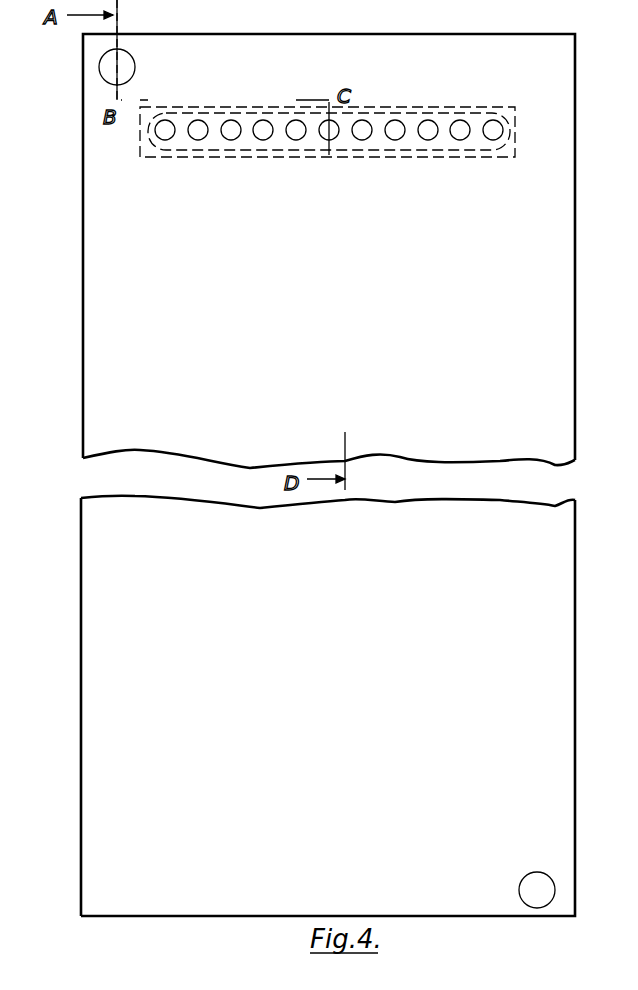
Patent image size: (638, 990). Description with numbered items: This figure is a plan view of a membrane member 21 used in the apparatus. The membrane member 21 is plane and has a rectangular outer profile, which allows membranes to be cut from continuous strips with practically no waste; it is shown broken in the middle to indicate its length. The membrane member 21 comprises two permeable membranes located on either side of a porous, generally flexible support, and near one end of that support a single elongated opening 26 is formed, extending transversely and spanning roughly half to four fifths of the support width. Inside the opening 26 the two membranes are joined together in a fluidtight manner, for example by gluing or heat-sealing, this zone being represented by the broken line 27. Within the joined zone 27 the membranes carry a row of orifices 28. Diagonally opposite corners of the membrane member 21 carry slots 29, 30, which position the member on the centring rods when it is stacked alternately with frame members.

The membrane member 21 is at (100, 586).
The opening 26 is at (350, 152).
The fluidtight joining zone 27 is at (313, 152).
The orifices 28 is at (259, 138).
The slot 29 is at (100, 68).
The slot 30 is at (530, 892).